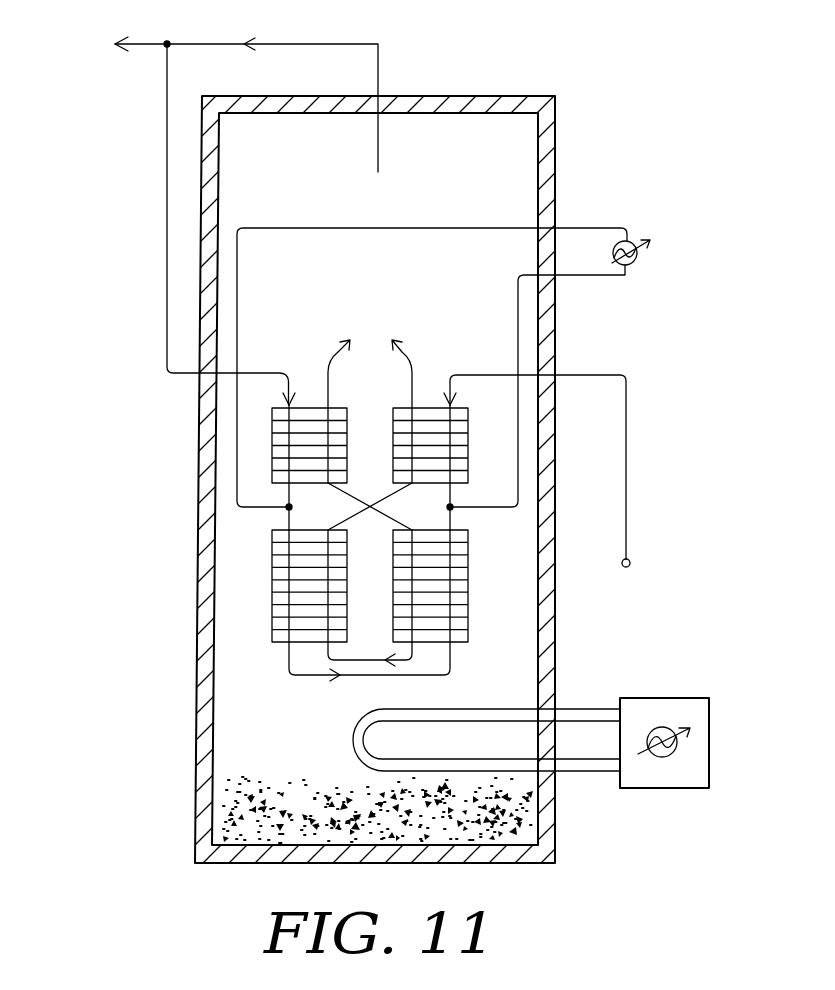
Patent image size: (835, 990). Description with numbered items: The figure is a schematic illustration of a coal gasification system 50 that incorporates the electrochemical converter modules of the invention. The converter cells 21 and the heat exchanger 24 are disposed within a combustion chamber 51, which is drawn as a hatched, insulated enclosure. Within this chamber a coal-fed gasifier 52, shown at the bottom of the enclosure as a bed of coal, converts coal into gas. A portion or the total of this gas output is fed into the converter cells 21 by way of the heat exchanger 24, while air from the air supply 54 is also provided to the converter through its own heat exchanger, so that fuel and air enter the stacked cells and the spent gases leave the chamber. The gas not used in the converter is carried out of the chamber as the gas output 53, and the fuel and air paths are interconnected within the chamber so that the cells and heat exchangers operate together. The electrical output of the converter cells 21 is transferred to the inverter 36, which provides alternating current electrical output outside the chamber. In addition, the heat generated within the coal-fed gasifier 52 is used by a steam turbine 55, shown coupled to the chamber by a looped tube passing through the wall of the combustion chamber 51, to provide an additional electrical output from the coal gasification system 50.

The coal gasification system 50 is at (540, 97).
The combustion chamber 51 is at (553, 484).
The gas output 53 is at (211, 208).
The inverter 36 is at (460, 355).
The air supply 54 is at (550, 491).
The heat exchanger 24 is at (371, 454).
The converter cells 21 is at (373, 593).
The steam turbine 55 is at (543, 757).
The coal-fed gasifier 52 is at (347, 806).